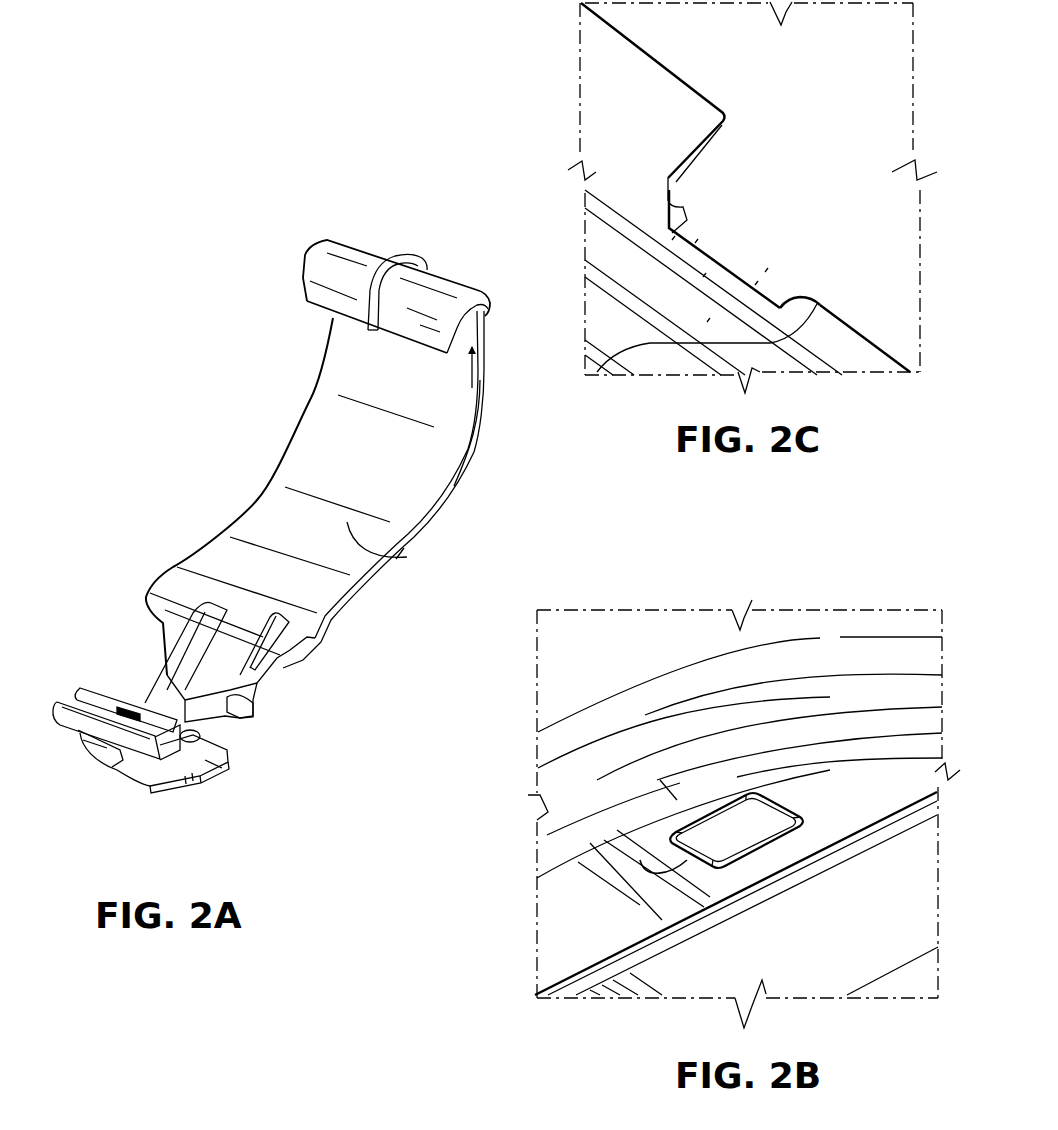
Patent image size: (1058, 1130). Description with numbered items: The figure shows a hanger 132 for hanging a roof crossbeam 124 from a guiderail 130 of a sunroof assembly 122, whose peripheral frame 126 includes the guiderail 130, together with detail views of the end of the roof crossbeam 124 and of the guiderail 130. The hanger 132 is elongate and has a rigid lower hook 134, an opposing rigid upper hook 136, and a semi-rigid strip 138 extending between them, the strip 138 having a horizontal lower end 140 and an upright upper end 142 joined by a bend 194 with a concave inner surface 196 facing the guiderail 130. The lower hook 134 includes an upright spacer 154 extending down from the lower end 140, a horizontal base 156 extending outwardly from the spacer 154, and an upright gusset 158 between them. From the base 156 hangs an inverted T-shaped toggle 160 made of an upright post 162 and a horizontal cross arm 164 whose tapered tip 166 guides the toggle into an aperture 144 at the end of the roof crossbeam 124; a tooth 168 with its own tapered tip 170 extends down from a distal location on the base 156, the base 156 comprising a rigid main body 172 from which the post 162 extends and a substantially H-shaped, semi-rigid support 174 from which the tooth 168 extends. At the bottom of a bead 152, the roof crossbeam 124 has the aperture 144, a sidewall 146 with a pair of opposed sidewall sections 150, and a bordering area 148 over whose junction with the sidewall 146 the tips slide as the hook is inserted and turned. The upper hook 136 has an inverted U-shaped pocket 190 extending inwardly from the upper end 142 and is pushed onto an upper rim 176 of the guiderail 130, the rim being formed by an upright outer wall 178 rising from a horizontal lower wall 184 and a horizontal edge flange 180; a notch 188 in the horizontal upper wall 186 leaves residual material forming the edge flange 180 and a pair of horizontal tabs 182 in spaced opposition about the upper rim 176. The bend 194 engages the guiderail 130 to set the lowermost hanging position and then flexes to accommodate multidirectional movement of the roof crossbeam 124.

In FIG. 2C, the sunroof assembly 122 is at (574, 20).
In FIG. 2B, the roof crossbeam 124 is at (610, 693).
In FIG. 2C, the peripheral frame 126 is at (577, 47).
In FIG. 2C, the guiderail 130 is at (577, 72).
In FIG. 2A, the hanger 132 is at (473, 443).
In FIG. 2A, the lower hook 134 is at (233, 753).
In FIG. 2A, the upper hook 136 is at (464, 284).
In FIG. 2A, the semi-rigid strip 138 is at (454, 486).
In FIG. 2A, the lower end 140 is at (329, 638).
In FIG. 2A, the upper end 142 is at (482, 352).
In FIG. 2B, the aperture 144 is at (748, 818).
In FIG. 2B, the sidewall 146 is at (727, 810).
In FIG. 2B, the bordering area 148 is at (710, 803).
In FIG. 2B, the sidewall section 150 is at (793, 808).
In FIG. 2B, the bead 152 is at (676, 800).
In FIG. 2A, the upright spacer 154 is at (257, 677).
In FIG. 2A, the horizontal base 156 is at (257, 705).
In FIG. 2A, the upright gusset 158 is at (253, 688).
In FIG. 2A, the inverted T-shaped toggle 160 is at (230, 770).
In FIG. 2A, the upright post 162 is at (200, 733).
In FIG. 2A, the horizontal cross arm 164 is at (207, 780).
In FIG. 2A, the tip 166 is at (140, 787).
In FIG. 2A, the tooth 168 is at (87, 757).
In FIG. 2A, the tip 170 is at (100, 763).
In FIG. 2A, the main body 172 is at (143, 688).
In FIG. 2A, the support 174 is at (100, 700).
In FIG. 2C, the upper rim 176 is at (707, 322).
In FIG. 2C, the upright outer wall 178 is at (755, 285).
In FIG. 2C, the horizontal edge flange 180 is at (703, 277).
In FIG. 2C, the horizontal tabs 182 is at (695, 243).
In FIG. 2C, the horizontal lower wall 184 is at (818, 302).
In FIG. 2C, the horizontal upper wall 186 is at (672, 240).
In FIG. 2C, the notch 188 is at (764, 275).
In FIG. 2A, the inverted U-shaped pocket 190 is at (482, 406).
In FIG. 2A, the bend 194 is at (427, 529).
In FIG. 2A, the concave inner surface 196 is at (396, 559).